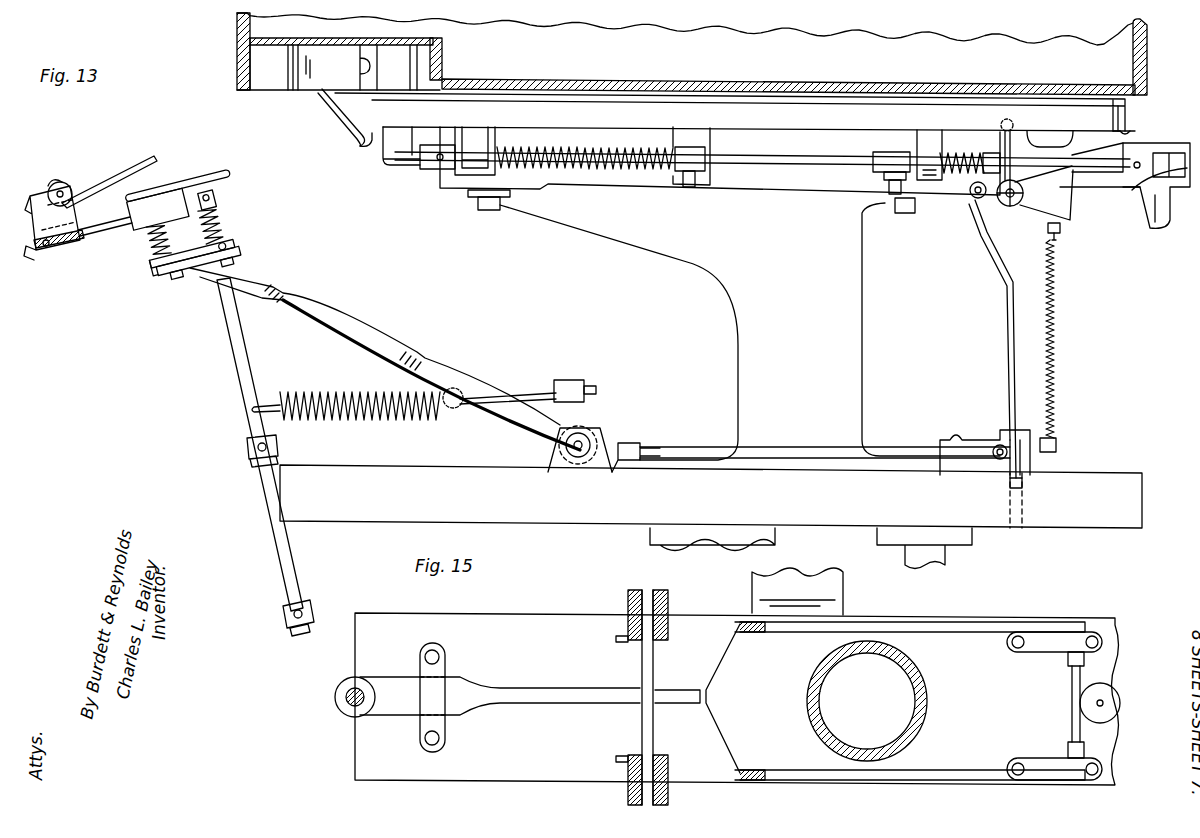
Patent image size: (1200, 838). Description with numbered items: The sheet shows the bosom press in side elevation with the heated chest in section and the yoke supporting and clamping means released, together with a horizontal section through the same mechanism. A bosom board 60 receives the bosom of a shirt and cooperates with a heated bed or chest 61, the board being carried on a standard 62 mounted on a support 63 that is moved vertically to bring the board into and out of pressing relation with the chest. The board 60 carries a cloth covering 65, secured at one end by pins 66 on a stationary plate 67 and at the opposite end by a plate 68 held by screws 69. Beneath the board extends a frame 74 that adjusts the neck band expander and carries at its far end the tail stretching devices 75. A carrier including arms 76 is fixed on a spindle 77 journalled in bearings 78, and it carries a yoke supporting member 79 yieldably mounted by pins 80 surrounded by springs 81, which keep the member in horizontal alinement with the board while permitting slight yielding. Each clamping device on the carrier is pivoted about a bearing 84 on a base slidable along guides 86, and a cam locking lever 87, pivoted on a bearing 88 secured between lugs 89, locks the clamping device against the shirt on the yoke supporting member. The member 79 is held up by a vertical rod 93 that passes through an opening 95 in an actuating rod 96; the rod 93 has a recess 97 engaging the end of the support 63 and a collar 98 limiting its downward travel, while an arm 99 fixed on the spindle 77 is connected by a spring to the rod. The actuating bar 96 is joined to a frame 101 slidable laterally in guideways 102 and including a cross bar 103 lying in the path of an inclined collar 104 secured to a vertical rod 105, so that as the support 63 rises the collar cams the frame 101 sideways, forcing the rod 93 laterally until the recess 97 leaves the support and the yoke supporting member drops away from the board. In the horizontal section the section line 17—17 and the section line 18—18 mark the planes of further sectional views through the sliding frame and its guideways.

In FIG. 13, the heated bed or chest 61 is at (1138, 62).
In FIG. 13, the cloth covering 65 is at (975, 92).
In FIG. 13, the plate 68 is at (1130, 104).
In FIG. 13, the bosom board 60 is at (1100, 118).
In FIG. 13, the screws 69 is at (1140, 130).
In FIG. 13, the stationary plate 67 is at (340, 115).
In FIG. 13, the pins 66 is at (372, 148).
In FIG. 13, the frame 74 is at (408, 162).
In FIG. 13, the tail stretching devices 75 is at (1080, 191).
In FIG. 13, the standard 62 is at (750, 331).
In FIG. 15, the standard 62 is at (918, 712).
In FIG. 13, the rod 105 is at (1018, 395).
In FIG. 13, the inclined collar 104 is at (1045, 448).
In FIG. 15, the inclined collar 104 is at (1085, 712).
In FIG. 13, the frame 101 is at (793, 452).
In FIG. 15, the frame 101 is at (968, 633).
In FIG. 13, the guideways 102 is at (968, 446).
In FIG. 15, the guideways 102 is at (1043, 648).
In FIG. 13, the support 63 is at (578, 516).
In FIG. 13, the spindle 77 is at (592, 440).
In FIG. 15, the spindle 77 is at (648, 722).
In FIG. 13, the arm 99 is at (583, 378).
In FIG. 13, the recess 97 is at (292, 590).
In FIG. 13, the collar 98 is at (250, 455).
In FIG. 13, the yoke supporting member 79 is at (118, 165).
In FIG. 13, the bearing 88 is at (64, 186).
In FIG. 13, the lugs 89 is at (50, 185).
In FIG. 13, the cam locking lever 87 is at (40, 205).
In FIG. 13, the bearing 84 is at (54, 250).
In FIG. 13, the guides 86 is at (105, 228).
In FIG. 13, the springs 81 is at (212, 204).
In FIG. 13, the pins 80 is at (153, 254).
In FIG. 15, the actuating rod 96 is at (553, 704).
In FIG. 15, the vertical rod 93 is at (366, 688).
In FIG. 15, the opening 95 is at (350, 722).
In FIG. 15, the bearings 78 is at (668, 628).
In FIG. 15, the arms 76 is at (630, 788).
In FIG. 15, the cross bar 103 is at (1072, 692).
In FIG. 15, the section line 17— 17 is at (1135, 768).
In FIG. 15, the section line 18— 18 is at (1076, 815).